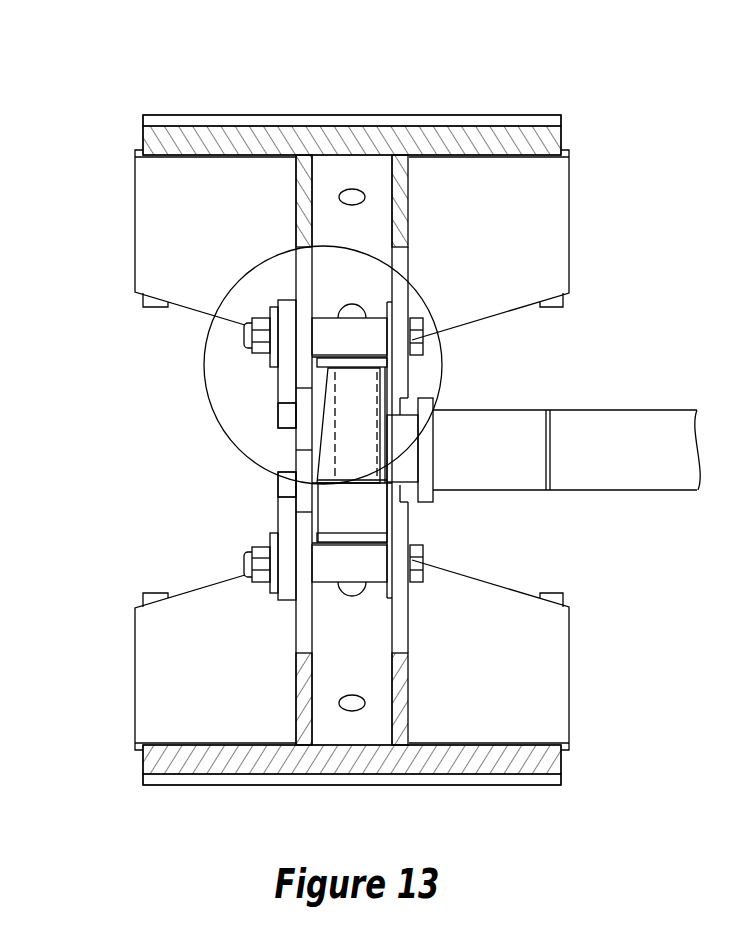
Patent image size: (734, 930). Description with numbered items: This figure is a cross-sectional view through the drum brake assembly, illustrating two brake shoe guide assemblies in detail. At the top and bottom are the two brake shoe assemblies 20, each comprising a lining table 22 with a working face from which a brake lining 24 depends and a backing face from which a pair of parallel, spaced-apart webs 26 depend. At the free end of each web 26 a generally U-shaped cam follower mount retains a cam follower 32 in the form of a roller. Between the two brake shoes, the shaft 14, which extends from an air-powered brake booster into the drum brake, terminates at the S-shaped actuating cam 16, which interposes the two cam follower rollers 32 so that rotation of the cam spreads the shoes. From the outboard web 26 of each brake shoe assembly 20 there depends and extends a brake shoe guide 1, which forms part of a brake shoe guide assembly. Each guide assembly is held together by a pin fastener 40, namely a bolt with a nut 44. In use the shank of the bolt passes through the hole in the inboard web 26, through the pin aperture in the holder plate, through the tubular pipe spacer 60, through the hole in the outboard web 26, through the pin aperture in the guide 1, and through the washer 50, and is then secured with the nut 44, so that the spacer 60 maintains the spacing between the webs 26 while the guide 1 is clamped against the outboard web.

The brake shoe guide 1 is at (274, 414).
The shaft 14 is at (608, 435).
The S-shaped actuating cam 16 is at (358, 412).
The brake shoe assembly 20 is at (578, 107).
The lining table 22 is at (156, 141).
The brake lining 24 is at (162, 115).
The web 26 is at (296, 198).
The cam follower 32 is at (358, 522).
The pin fastener 40 is at (243, 339).
The nut 44 is at (270, 362).
The washer 50 is at (276, 400).
The tubular pipe spacer 60 is at (372, 332).